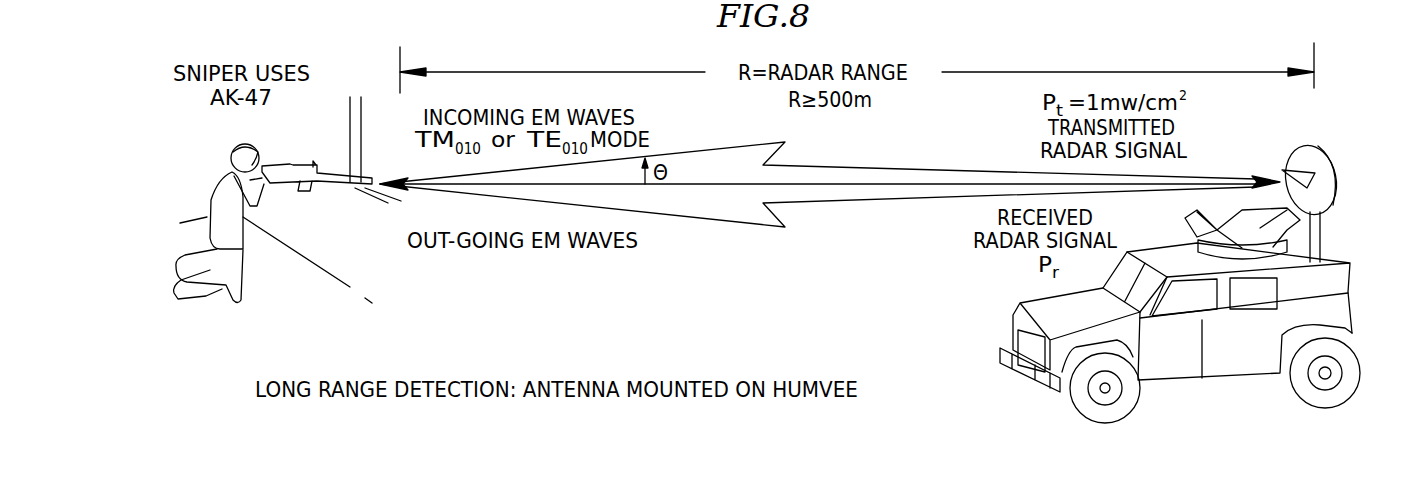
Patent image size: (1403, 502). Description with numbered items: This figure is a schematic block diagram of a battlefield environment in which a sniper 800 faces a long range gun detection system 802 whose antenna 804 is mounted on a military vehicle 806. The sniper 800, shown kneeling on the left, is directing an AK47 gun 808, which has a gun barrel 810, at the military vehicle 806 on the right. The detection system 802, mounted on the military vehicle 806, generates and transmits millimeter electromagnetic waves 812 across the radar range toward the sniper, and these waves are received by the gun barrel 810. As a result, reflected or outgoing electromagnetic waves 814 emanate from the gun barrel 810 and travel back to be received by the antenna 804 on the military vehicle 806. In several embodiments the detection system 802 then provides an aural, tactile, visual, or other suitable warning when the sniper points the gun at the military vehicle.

The sniper 800 is at (340, 57).
The long range gun detection system 802 is at (1326, 103).
The antenna 804 is at (1292, 193).
The military vehicle 806 is at (1257, 363).
The AK47 gun 808 is at (287, 165).
The gun barrel 810 is at (340, 185).
The millimeter electromagnetic waves 812 is at (850, 165).
The reflected or outgoing electromagnetic waves 814 is at (847, 200).